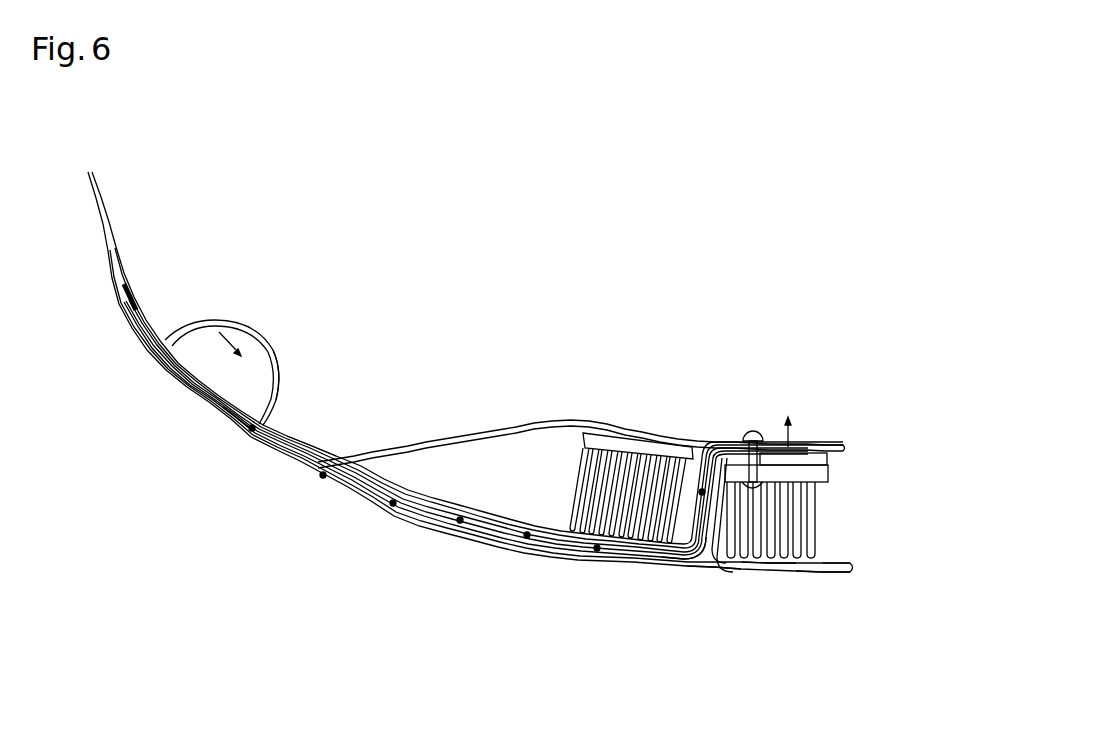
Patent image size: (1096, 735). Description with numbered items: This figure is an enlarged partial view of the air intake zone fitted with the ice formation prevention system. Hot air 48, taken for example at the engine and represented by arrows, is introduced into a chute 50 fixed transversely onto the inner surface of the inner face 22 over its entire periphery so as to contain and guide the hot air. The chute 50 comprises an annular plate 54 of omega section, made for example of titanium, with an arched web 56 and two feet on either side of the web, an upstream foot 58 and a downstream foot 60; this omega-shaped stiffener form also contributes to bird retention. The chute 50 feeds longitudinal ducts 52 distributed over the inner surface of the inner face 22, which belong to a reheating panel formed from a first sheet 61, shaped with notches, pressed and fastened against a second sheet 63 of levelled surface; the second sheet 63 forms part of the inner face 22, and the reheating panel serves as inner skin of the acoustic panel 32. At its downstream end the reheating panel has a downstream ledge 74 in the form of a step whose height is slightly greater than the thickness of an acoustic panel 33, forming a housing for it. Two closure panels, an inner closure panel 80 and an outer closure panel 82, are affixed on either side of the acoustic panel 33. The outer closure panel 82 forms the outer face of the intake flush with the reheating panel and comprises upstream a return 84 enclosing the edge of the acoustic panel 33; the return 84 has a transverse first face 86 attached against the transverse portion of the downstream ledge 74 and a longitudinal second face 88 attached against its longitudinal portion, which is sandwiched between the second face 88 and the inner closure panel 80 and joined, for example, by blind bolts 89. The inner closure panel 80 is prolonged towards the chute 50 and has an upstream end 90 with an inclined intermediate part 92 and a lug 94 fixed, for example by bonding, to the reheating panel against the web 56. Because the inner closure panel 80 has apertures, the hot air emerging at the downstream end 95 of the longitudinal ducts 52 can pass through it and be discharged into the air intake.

The inner face 22 is at (333, 493).
The acoustic panel 32 is at (675, 447).
The acoustic panel 33 is at (813, 569).
The hot air 48 is at (258, 357).
The chute 50 is at (223, 320).
The longitudinal ducts 52 is at (413, 519).
The annular plate 54 is at (197, 318).
The arched web 56 is at (278, 368).
The upstream foot 58 is at (142, 307).
The downstream foot 60 is at (312, 458).
The first sheet 61 is at (543, 546).
The second sheet 63 is at (490, 538).
The downstream ledge 74 is at (667, 567).
The inner closure panel 80 is at (647, 432).
The outer closure panel 82 is at (853, 573).
The return 84 is at (703, 562).
The transverse first face 86 is at (753, 568).
The longitudinal second face 88 is at (787, 470).
The blind bolts 89 is at (758, 428).
The upstream end 90 is at (530, 427).
The inclined intermediate part 92 is at (460, 437).
The lug 94 is at (289, 437).
The downstream end 95 is at (800, 445).